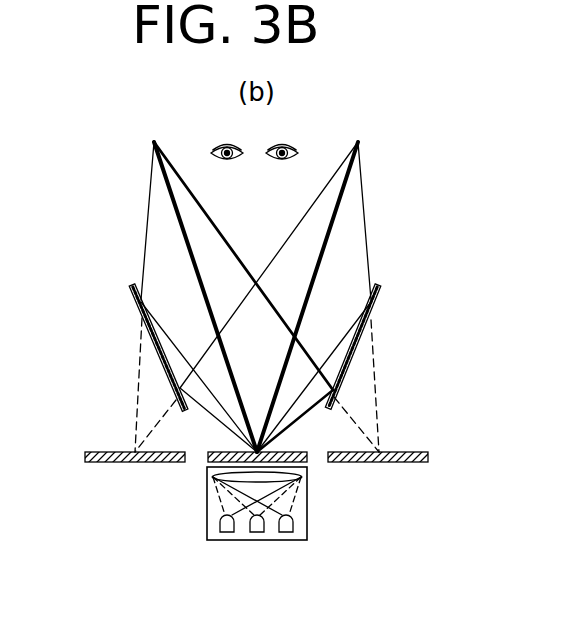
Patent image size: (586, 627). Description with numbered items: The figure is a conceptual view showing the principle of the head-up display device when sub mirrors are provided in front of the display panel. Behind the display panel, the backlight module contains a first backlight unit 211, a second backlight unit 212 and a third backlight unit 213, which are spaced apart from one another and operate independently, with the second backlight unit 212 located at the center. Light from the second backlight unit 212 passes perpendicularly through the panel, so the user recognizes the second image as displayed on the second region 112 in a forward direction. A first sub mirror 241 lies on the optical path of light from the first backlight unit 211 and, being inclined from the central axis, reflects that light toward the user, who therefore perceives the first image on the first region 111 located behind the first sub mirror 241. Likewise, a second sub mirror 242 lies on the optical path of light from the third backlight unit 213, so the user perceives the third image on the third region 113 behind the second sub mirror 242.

The first region 111 is at (407, 462).
The second region 112 is at (307, 459).
The third region 113 is at (134, 462).
The first backlight unit 211 is at (224, 532).
The second backlight unit 212 is at (257, 532).
The third backlight unit 213 is at (290, 532).
The first sub mirror 241 is at (373, 310).
The second sub mirror 242 is at (137, 310).